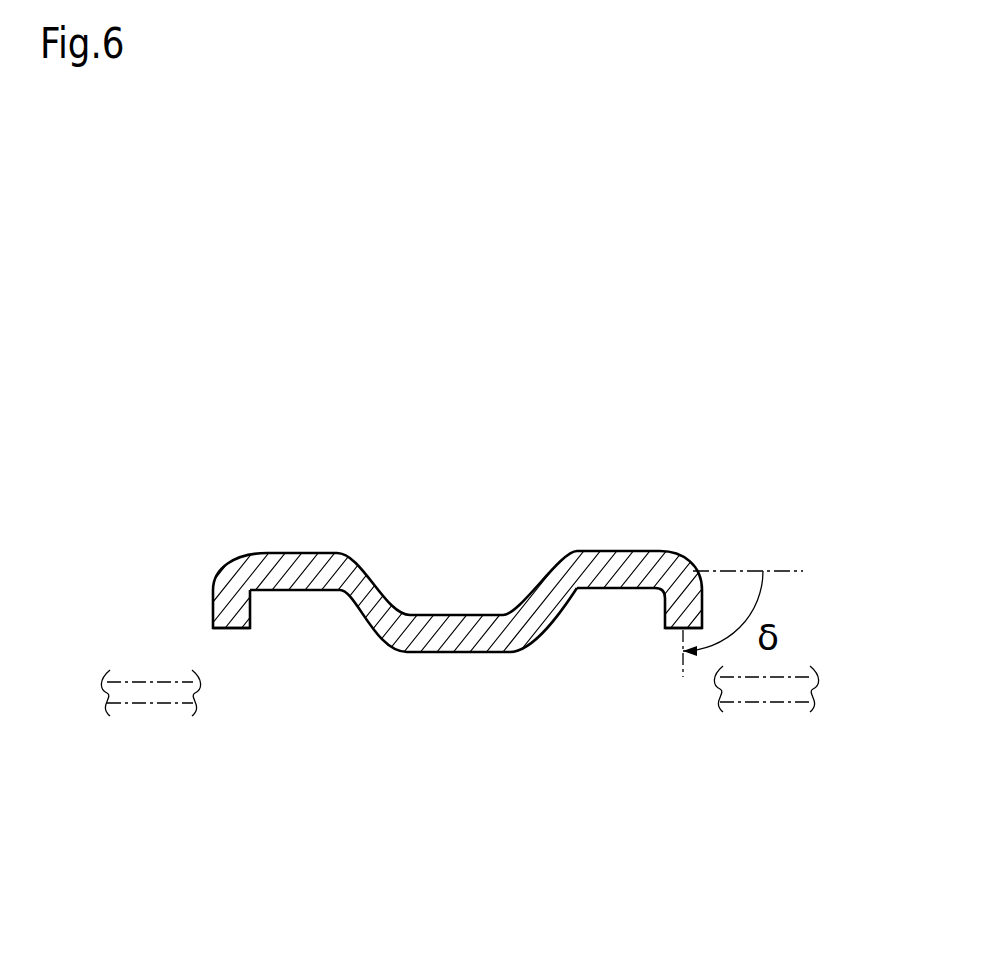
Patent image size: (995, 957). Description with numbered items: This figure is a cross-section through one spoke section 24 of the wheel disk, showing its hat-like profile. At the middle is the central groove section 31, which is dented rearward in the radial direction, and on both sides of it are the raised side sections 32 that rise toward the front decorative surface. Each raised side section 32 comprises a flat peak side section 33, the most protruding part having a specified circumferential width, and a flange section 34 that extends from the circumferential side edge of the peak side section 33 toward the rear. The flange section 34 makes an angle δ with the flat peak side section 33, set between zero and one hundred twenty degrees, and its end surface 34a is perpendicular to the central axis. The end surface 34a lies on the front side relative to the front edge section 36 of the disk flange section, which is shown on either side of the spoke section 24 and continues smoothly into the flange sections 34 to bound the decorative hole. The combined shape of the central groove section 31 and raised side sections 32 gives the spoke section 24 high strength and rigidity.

The spoke section 24 is at (773, 505).
The central groove section 31 is at (466, 613).
The raised side section 32 is at (320, 552).
The peak side section 33 is at (285, 552).
The flange section 34 is at (228, 610).
The end surface 34a is at (213, 722).
The front edge section 36 is at (105, 800).